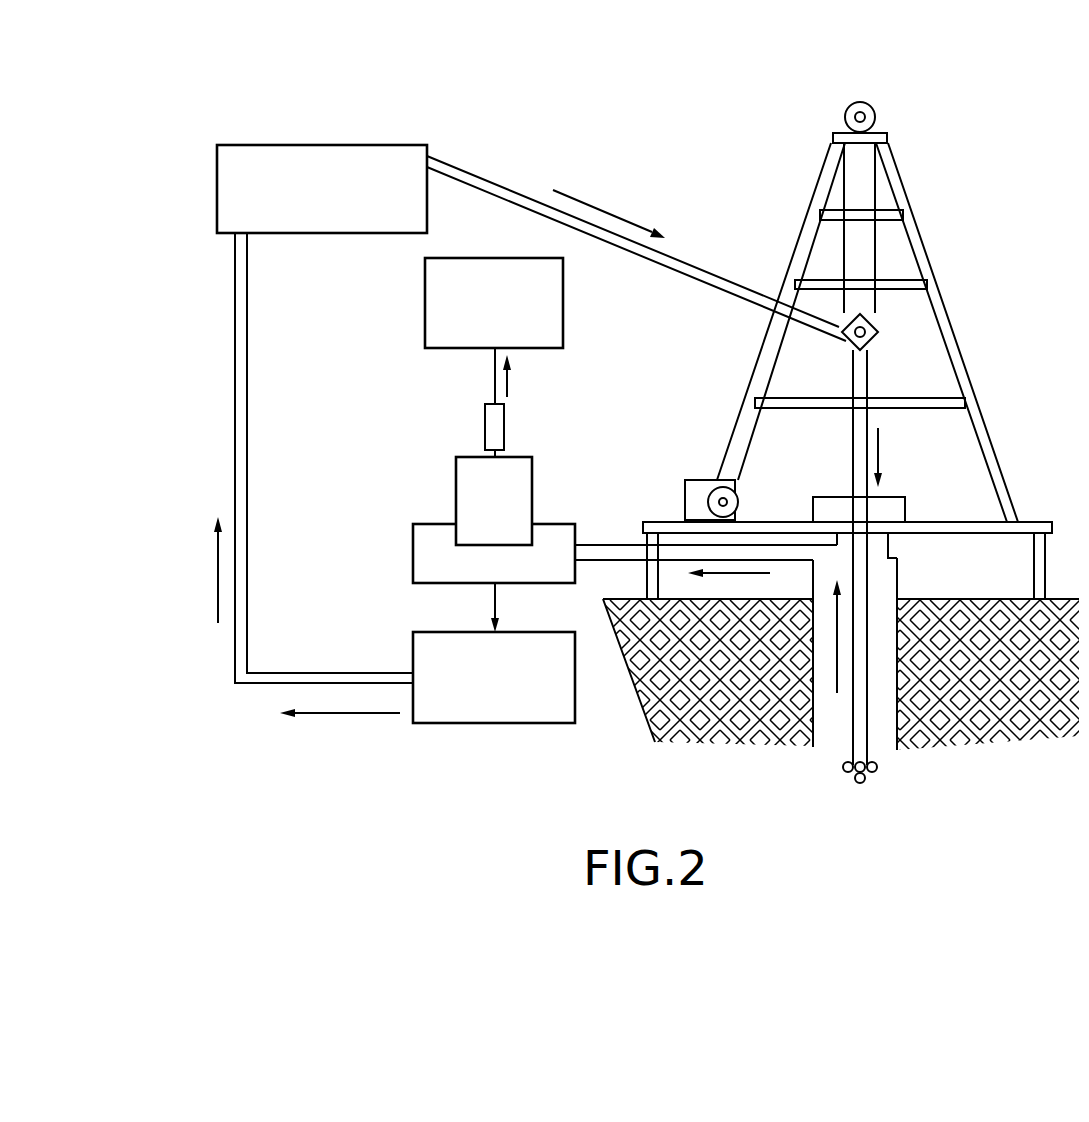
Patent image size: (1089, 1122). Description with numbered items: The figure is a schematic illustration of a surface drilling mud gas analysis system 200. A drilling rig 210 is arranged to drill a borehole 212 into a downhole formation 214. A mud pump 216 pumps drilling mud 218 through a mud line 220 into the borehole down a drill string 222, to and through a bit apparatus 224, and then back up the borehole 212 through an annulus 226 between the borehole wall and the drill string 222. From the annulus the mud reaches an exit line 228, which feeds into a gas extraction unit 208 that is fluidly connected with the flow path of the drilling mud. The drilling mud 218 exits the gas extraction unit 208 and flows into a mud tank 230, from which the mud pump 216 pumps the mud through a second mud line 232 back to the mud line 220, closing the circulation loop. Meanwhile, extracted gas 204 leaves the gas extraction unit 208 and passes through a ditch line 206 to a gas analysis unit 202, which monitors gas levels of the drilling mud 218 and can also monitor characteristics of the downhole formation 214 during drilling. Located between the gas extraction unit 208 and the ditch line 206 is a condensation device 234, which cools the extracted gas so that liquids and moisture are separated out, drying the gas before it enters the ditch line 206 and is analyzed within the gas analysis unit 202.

The surface drilling mud gas analysis system 200 is at (985, 134).
The gas analysis unit 202 is at (425, 295).
The extracted gas 204 is at (510, 390).
The ditch line 206 is at (494, 383).
The gas extraction unit 208 is at (456, 485).
The drilling rig 210 is at (951, 327).
The borehole 212 is at (897, 680).
The downhole formation 214 is at (1005, 733).
The mud pump 216 is at (322, 145).
The drilling mud 218 is at (840, 388).
The mud line 220 is at (477, 176).
The drill string 222 is at (867, 585).
The bit apparatus 224 is at (870, 782).
The annulus 226 is at (832, 728).
The exit line 228 is at (602, 545).
The mud tank 230 is at (413, 658).
The mud line 232 is at (247, 538).
The condensation device 234 is at (504, 432).